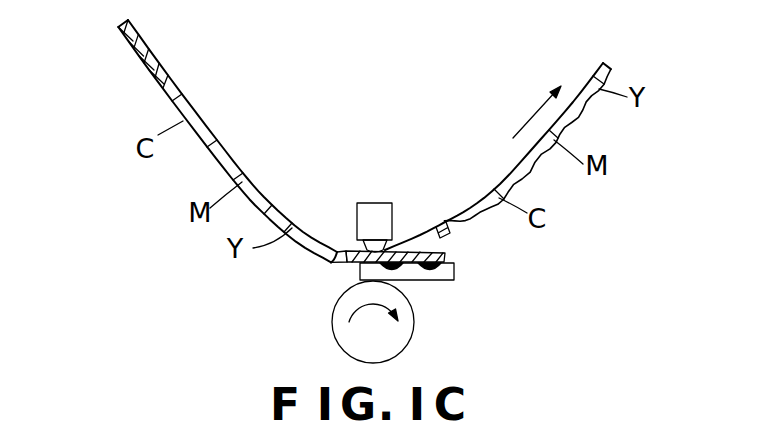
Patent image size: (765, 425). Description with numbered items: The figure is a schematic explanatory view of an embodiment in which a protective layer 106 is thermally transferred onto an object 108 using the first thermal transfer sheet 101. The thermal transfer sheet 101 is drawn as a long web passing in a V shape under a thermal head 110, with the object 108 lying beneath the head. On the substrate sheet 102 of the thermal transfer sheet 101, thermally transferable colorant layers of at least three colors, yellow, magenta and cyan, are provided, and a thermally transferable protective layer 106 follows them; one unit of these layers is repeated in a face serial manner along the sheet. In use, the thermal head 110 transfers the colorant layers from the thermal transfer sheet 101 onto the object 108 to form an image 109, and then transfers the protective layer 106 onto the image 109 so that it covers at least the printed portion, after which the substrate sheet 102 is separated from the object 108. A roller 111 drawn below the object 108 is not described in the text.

The thermal transfer sheet 101 is at (214, 126).
The substrate sheet 102 is at (344, 250).
The protective layer 106 is at (143, 67).
The object 108 is at (360, 267).
The image 109 is at (428, 280).
The thermal head 110 is at (376, 212).
The roller 111 is at (337, 335).